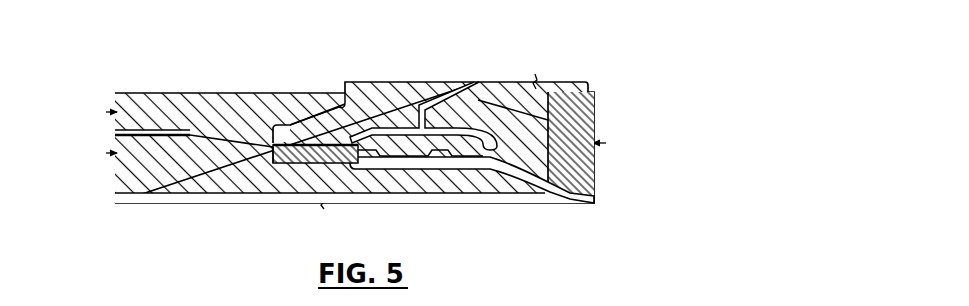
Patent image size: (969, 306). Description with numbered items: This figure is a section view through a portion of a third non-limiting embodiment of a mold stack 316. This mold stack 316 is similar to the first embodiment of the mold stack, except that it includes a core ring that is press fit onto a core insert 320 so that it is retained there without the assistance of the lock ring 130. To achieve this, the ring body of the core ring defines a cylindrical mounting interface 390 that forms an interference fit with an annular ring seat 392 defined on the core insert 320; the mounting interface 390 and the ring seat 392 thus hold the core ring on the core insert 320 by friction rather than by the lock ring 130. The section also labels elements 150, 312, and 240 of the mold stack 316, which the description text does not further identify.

The lock ring 130 is at (222, 84).
The connector module 150 is at (448, 71).
The annular ring seat 392 is at (277, 144).
The mold stack 316 is at (669, 95).
The base 312 is at (116, 128).
The cylindrical mounting interface 390 is at (274, 162).
The contact 240 is at (297, 168).
The core insert 320 is at (523, 189).